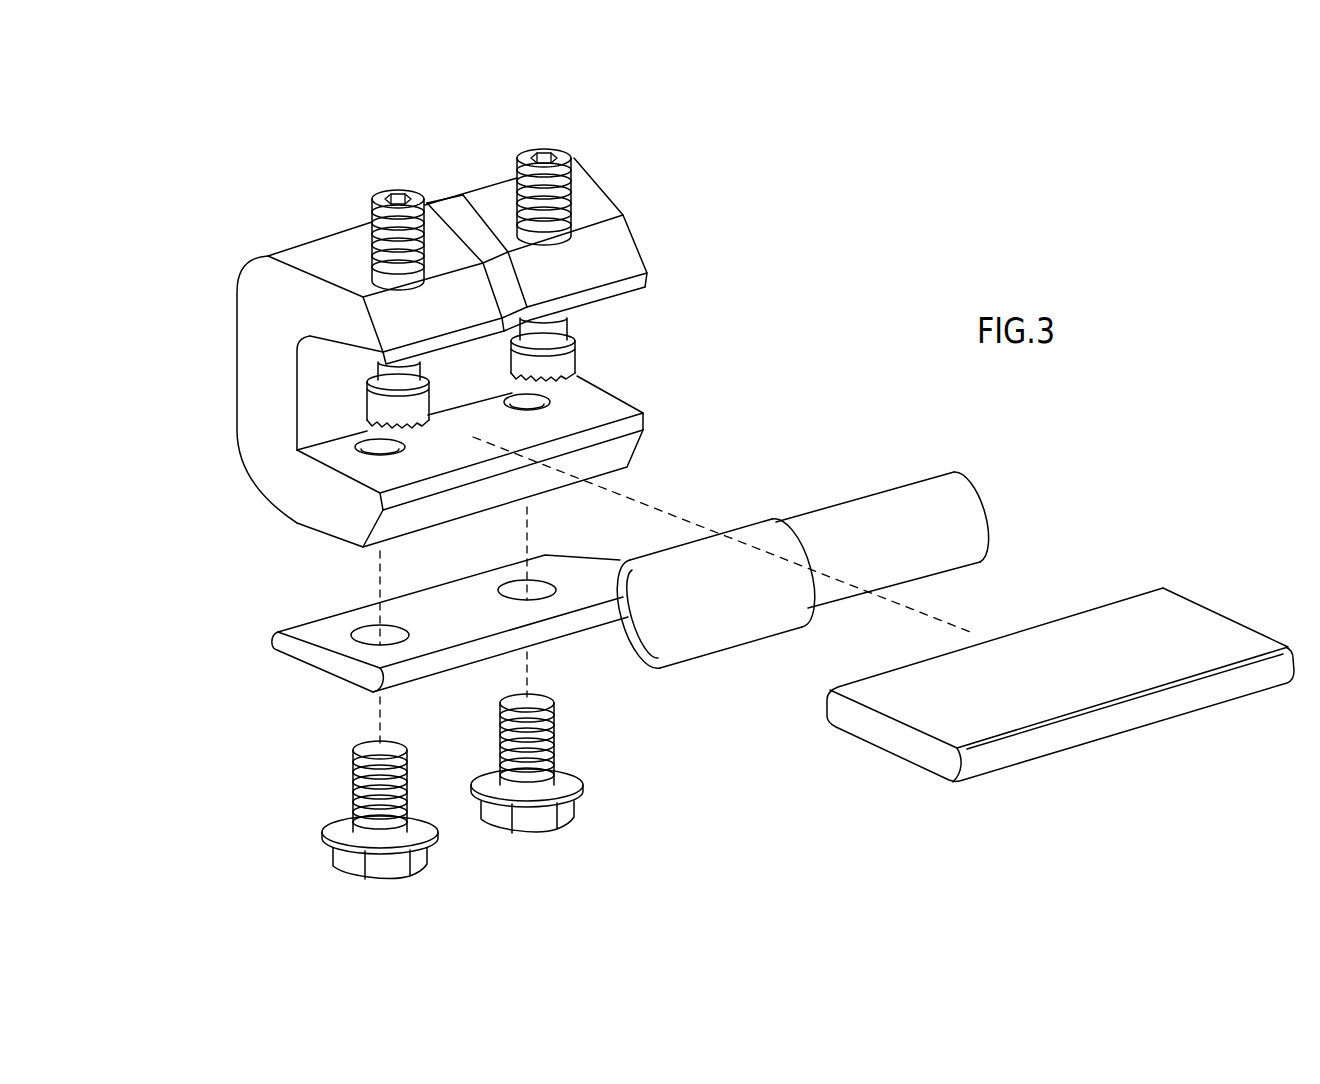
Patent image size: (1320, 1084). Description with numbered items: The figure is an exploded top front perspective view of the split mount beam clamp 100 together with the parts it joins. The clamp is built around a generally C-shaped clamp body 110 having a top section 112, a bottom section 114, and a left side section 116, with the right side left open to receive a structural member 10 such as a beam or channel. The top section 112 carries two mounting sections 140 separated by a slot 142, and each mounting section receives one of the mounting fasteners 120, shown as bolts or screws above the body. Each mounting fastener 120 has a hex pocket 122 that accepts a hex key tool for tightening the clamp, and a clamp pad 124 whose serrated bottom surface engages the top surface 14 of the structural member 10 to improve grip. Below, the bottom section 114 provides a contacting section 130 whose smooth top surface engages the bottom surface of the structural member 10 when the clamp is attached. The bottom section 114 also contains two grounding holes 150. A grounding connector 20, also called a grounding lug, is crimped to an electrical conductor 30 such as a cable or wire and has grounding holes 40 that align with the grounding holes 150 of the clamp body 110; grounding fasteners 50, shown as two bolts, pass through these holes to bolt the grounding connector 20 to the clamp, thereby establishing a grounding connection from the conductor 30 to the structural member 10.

The split mount beam clamp 100 is at (262, 210).
The clamp body 110 is at (237, 318).
The top section 112 is at (327, 303).
The bottom section 114 is at (318, 494).
The left side section 116 is at (265, 344).
The mounting fastener 120 is at (404, 195).
The hex pocket 122 is at (393, 200).
The clamp pad 124 is at (373, 405).
The contacting section 130 is at (625, 450).
The mounting section 140 is at (340, 243).
The slot 142 is at (455, 238).
The grounding hole 150 is at (365, 438).
The structural member 10 is at (1085, 606).
The top surface of the structural member 14 is at (1210, 628).
The grounding connector 20 is at (755, 523).
The electrical conductor 30 is at (880, 490).
The grounding hole 40 is at (370, 623).
The grounding fastener 50 is at (413, 868).